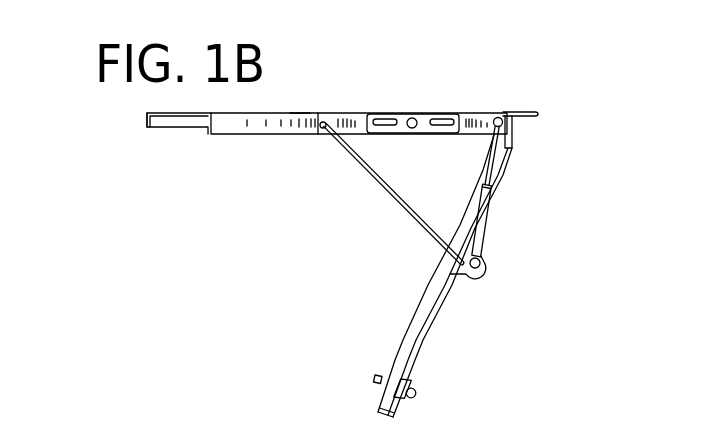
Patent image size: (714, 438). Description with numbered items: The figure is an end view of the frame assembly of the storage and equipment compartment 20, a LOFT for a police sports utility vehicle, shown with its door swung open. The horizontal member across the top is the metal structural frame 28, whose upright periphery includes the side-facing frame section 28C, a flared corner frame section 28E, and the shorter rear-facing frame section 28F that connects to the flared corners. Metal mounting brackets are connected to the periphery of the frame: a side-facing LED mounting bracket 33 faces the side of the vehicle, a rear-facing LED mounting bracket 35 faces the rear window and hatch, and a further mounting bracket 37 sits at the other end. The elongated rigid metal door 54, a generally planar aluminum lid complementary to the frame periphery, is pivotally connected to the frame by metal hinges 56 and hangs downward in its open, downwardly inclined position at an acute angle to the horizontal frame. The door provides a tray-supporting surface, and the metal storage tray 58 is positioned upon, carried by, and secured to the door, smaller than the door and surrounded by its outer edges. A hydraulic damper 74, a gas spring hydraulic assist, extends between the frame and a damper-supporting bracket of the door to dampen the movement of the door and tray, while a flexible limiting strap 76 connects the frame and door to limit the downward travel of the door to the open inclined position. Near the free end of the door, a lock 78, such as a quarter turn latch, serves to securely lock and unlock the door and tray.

The storage and equipment compartment 20 is at (365, 82).
The metal structural frame 28 is at (272, 136).
The side-facing frame section 28C is at (352, 124).
The corner frame section 28E is at (298, 117).
The rear-facing frame section 28F is at (208, 133).
The side-facing LED mounting bracket 33 is at (427, 113).
The rear-facing LED mounting bracket 35 is at (147, 123).
The metal mounting bracket 37 is at (538, 114).
The door 54 is at (383, 414).
The hinges 56 is at (499, 117).
The storage tray 58 is at (403, 330).
The hydraulic dampers 74 is at (486, 220).
The flexible limiting straps 76 is at (390, 197).
The locks 78 is at (420, 392).